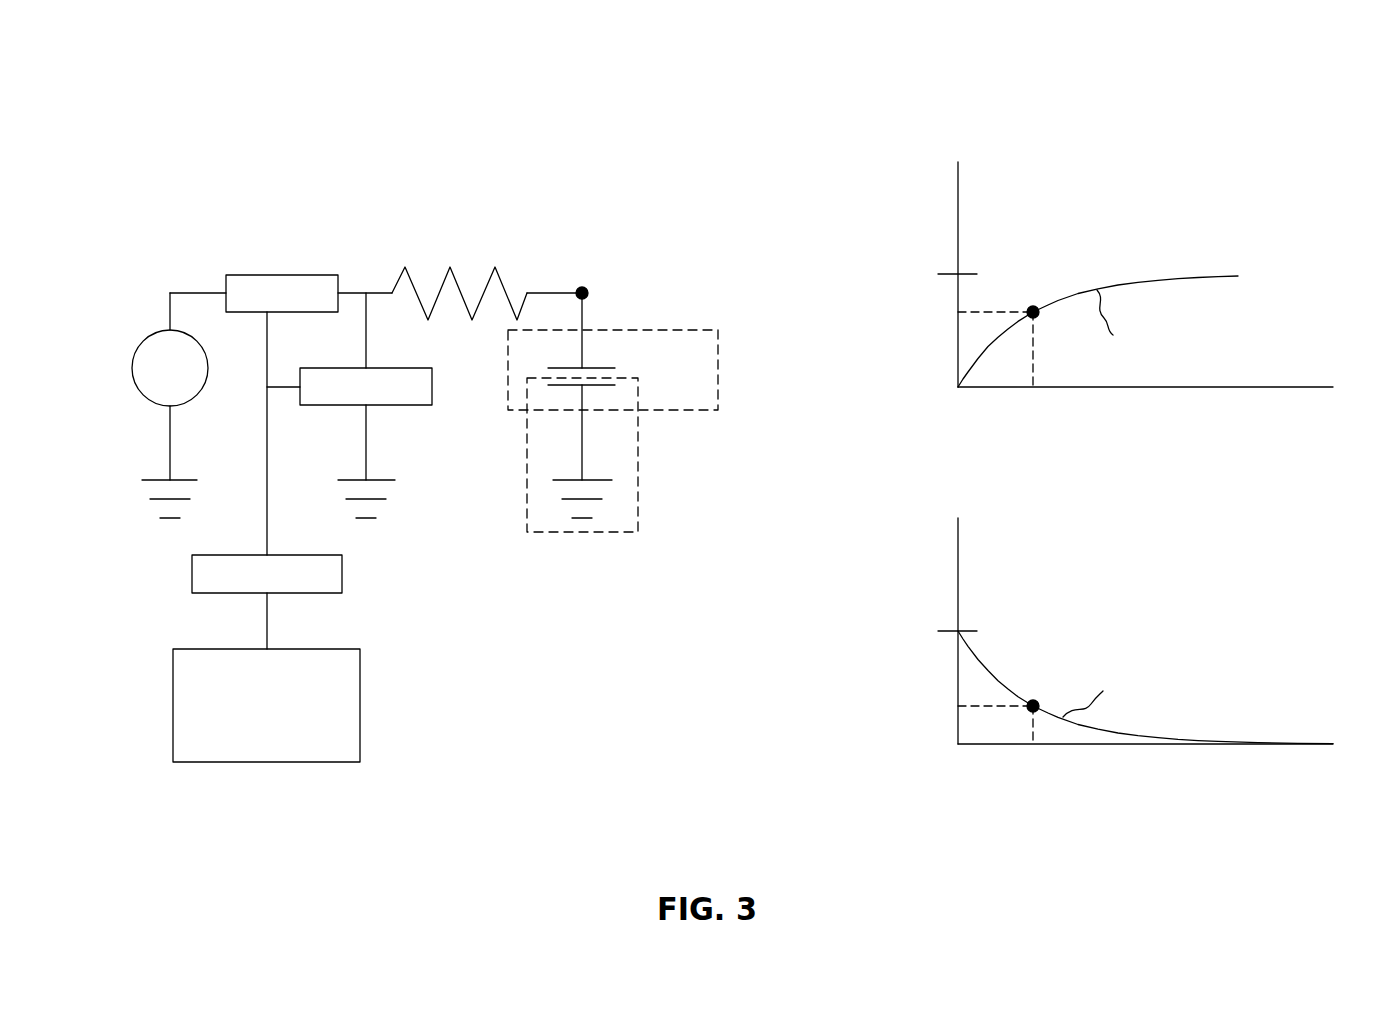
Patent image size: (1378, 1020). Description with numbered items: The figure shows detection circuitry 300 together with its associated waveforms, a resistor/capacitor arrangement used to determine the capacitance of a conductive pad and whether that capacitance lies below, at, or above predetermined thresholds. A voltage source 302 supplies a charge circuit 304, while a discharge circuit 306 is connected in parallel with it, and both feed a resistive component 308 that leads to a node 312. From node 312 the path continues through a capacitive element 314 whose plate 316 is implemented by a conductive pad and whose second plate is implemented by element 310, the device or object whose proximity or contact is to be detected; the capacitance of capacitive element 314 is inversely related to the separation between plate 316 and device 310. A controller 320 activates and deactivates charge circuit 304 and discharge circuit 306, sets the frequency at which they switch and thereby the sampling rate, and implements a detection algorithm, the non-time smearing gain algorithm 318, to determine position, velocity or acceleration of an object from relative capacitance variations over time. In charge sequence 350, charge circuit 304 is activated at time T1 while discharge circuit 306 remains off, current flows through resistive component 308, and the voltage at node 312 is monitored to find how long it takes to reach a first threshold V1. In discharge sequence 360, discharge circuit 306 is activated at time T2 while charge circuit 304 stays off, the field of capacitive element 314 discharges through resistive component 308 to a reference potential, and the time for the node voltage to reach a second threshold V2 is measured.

The detection circuitry 300 is at (251, 186).
The voltage source 302 is at (133, 372).
The charge circuit 304 is at (262, 275).
The discharge circuit 306 is at (432, 398).
The resistive component 308 is at (462, 307).
The device 310 is at (638, 522).
The node 312 is at (585, 289).
The capacitive element 314 is at (718, 382).
The plate 316 is at (600, 368).
The non-time smearing gain algorithm 318 is at (360, 713).
The controller 320 is at (342, 585).
The charge sequence 350 is at (1180, 186).
The discharge sequence 360 is at (1228, 570).